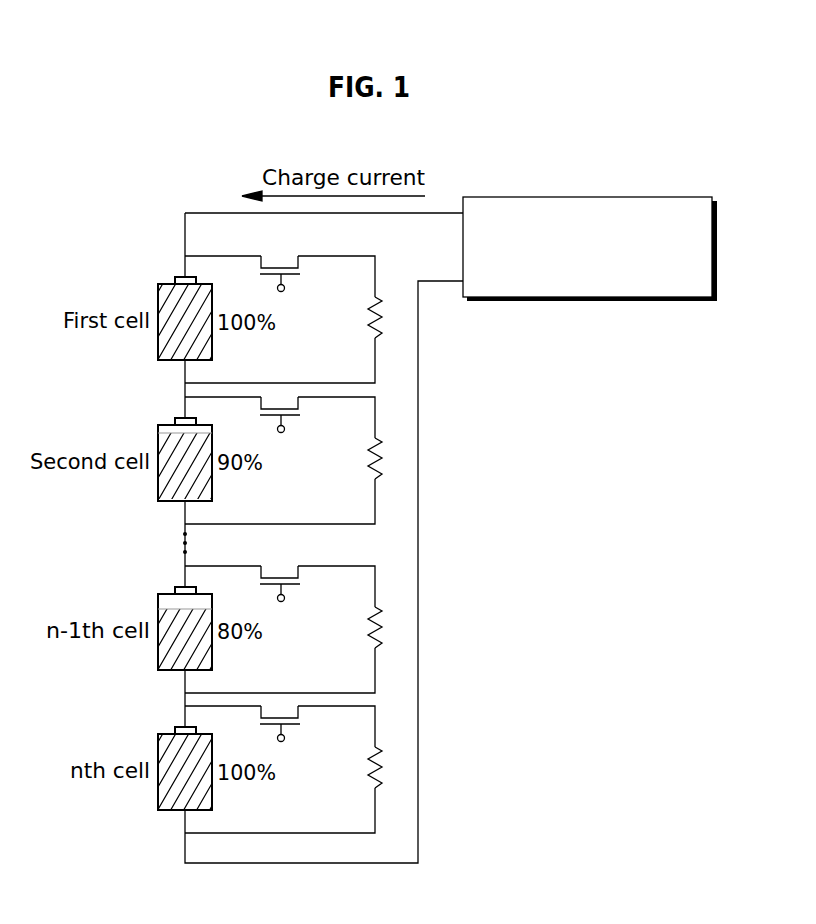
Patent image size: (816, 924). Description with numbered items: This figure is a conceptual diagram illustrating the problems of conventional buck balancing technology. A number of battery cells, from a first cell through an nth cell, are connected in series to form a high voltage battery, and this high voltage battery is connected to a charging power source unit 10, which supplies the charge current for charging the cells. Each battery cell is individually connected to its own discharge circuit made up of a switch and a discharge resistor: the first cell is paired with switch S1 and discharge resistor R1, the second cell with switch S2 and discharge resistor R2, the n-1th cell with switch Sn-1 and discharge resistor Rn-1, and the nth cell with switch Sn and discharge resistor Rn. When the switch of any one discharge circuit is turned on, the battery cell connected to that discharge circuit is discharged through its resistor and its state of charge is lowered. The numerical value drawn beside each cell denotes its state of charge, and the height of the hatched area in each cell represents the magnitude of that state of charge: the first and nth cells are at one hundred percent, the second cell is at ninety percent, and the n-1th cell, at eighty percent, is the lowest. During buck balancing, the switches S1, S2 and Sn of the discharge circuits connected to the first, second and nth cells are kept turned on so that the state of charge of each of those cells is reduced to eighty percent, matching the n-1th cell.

The charging power source unit 10 is at (586, 196).
The switch S1 is at (286, 280).
The switch S2 is at (286, 421).
The switch Sn-1 is at (293, 590).
The switch Sn is at (286, 730).
The discharge resistor R1 is at (359, 319).
The discharge resistor R2 is at (359, 460).
The discharge resistor Rn-1 is at (352, 628).
The discharge resistor Rn is at (359, 769).